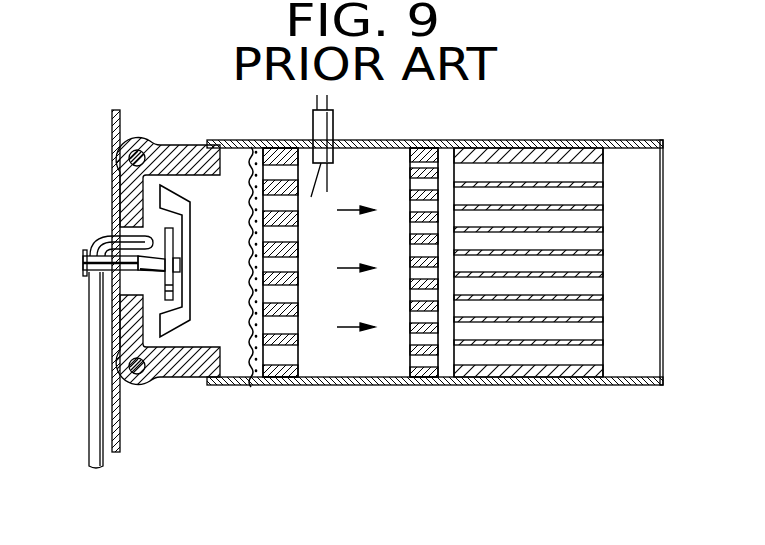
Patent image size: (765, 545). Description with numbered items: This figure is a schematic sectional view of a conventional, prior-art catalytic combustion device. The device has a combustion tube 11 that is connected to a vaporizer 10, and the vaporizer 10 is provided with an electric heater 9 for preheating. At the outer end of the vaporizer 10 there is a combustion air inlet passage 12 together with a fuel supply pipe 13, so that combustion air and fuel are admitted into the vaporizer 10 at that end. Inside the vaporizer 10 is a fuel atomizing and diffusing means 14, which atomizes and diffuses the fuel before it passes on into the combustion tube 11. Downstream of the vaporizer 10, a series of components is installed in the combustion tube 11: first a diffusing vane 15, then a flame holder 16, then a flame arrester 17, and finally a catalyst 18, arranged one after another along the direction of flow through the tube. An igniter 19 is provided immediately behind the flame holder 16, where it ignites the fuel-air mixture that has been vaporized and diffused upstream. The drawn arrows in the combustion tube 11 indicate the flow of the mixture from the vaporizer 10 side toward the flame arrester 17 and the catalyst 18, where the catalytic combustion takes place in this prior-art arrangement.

The electric heater 9 is at (128, 158).
The vaporizer 10 is at (182, 153).
The combustion tube 11 is at (400, 139).
The combustion air inlet passage 12 is at (123, 283).
The fuel supply pipe 13 is at (112, 237).
The fuel atomizing and diffusing means 14 is at (160, 217).
The diffusing vane 15 is at (252, 253).
The flame holder 16 is at (282, 146).
The flame arrester 17 is at (424, 365).
The catalyst 18 is at (528, 355).
The igniter 19 is at (334, 127).